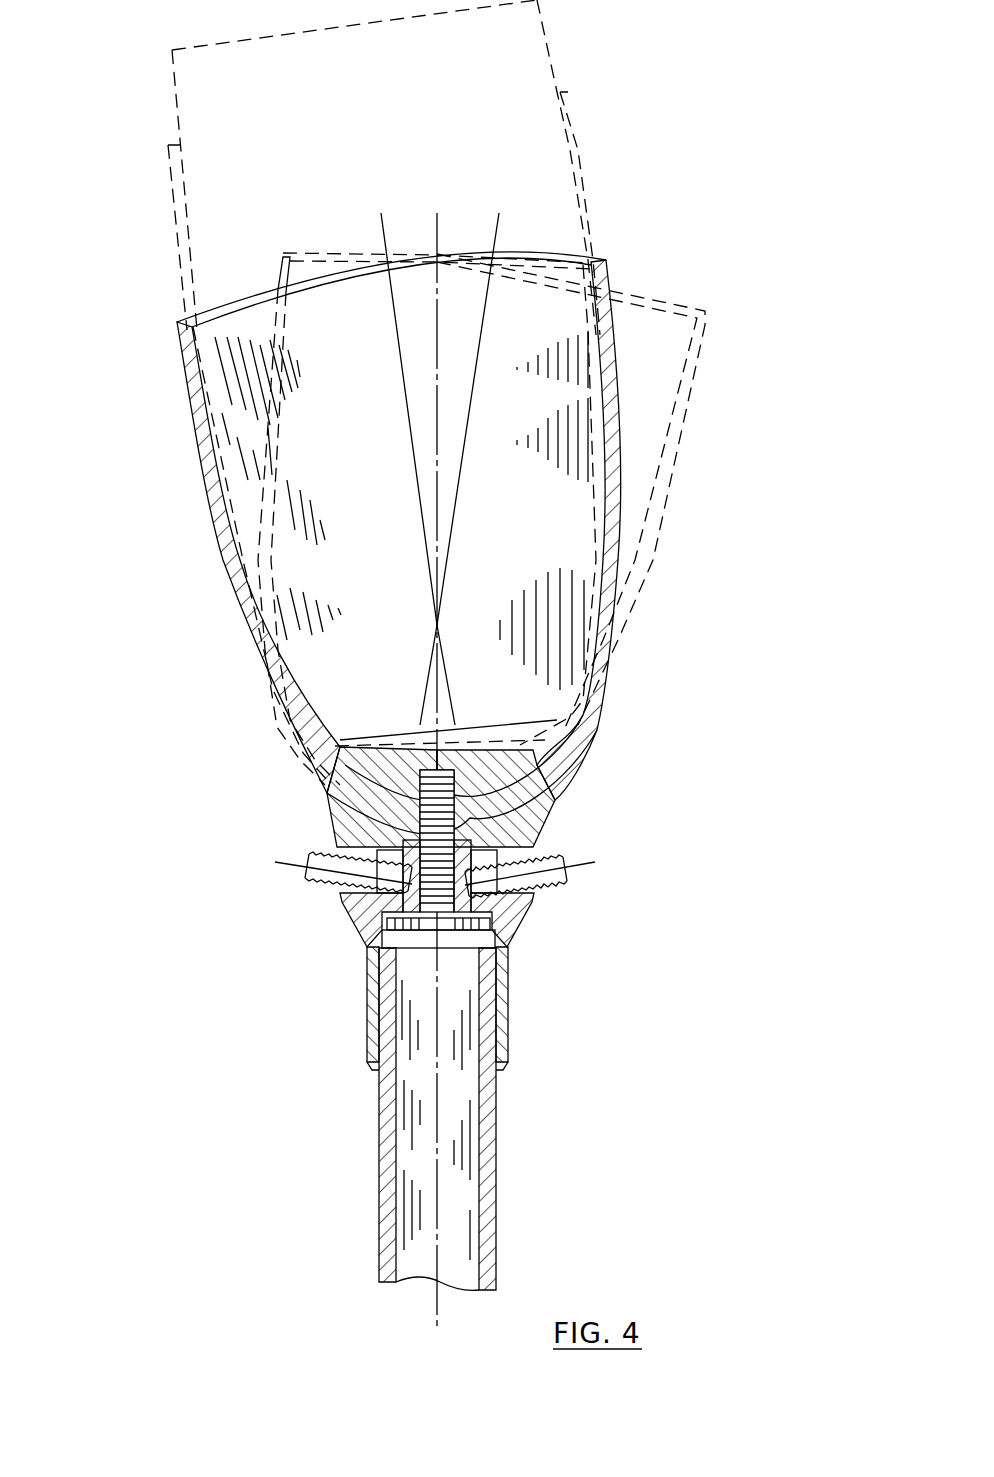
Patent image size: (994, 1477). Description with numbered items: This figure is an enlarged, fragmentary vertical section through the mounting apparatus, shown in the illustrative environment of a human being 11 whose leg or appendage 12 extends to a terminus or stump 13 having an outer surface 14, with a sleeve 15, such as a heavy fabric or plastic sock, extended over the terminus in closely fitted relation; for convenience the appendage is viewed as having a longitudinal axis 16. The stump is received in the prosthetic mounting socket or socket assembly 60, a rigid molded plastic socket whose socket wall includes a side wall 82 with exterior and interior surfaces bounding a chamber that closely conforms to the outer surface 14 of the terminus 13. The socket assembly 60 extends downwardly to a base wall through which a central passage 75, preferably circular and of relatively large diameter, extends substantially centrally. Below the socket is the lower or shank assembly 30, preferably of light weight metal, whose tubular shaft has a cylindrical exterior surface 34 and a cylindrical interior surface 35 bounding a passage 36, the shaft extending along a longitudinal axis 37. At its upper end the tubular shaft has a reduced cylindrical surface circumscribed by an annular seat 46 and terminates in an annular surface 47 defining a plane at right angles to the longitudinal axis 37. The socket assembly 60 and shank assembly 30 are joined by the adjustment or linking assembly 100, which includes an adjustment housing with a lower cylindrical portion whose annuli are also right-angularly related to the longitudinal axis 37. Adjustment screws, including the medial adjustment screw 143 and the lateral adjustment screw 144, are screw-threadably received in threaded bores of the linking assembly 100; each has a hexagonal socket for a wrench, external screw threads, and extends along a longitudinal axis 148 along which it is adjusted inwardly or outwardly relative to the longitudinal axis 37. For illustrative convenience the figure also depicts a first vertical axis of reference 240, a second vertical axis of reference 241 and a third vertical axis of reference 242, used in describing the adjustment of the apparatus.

The human being 11 is at (150, 97).
The leg or appendage 12 is at (553, 55).
The terminus or stump 13 is at (192, 452).
The outer surface 14 is at (183, 400).
The sleeve 15 is at (176, 234).
The longitudinal axis 16 is at (382, 228).
The lower or shank assembly 30 is at (420, 1139).
The cylindrical exterior surface 34 is at (376, 1197).
The cylindrical interior surface 35 is at (482, 1157).
The passage 36 is at (460, 1214).
The longitudinal axis 37 is at (436, 1297).
The annular seat 46 is at (503, 1043).
The annular surface 47 is at (497, 938).
The prosthetic mounting socket or socket assembly 60 is at (213, 513).
The central passage 75 is at (483, 803).
The side wall 82 is at (612, 351).
The adjustment or linking assembly 100 is at (345, 905).
The medial adjustment screw 143 is at (522, 882).
The lateral adjustment screw 144 is at (340, 882).
The longitudinal axis 148 is at (300, 862).
The first vertical axis of reference 240 is at (410, 440).
The second vertical axis of reference 241 is at (436, 401).
The third vertical axis of reference 242 is at (472, 408).